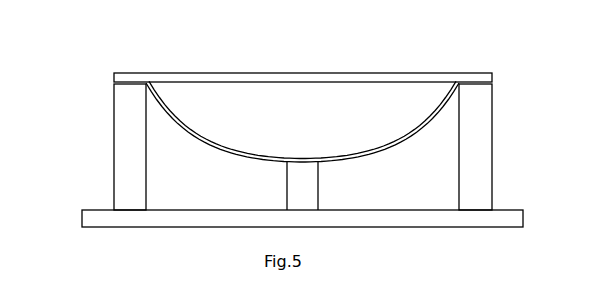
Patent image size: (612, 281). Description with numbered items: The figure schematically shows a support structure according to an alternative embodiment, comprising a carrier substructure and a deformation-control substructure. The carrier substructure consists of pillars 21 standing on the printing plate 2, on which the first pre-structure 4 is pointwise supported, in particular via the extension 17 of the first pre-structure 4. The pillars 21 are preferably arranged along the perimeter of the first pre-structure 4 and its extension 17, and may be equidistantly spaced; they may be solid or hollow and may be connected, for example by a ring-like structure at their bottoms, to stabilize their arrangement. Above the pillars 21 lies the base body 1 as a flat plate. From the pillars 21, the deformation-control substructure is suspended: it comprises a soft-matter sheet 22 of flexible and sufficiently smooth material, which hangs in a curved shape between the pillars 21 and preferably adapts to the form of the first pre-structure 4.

The base body 1 is at (277, 73).
The extension of the first pre-structure 17 is at (476, 58).
The pillars 21 is at (128, 152).
The printing plate 2 is at (125, 219).
The first pre-structure 4 is at (200, 100).
The sheet 22 is at (170, 118).